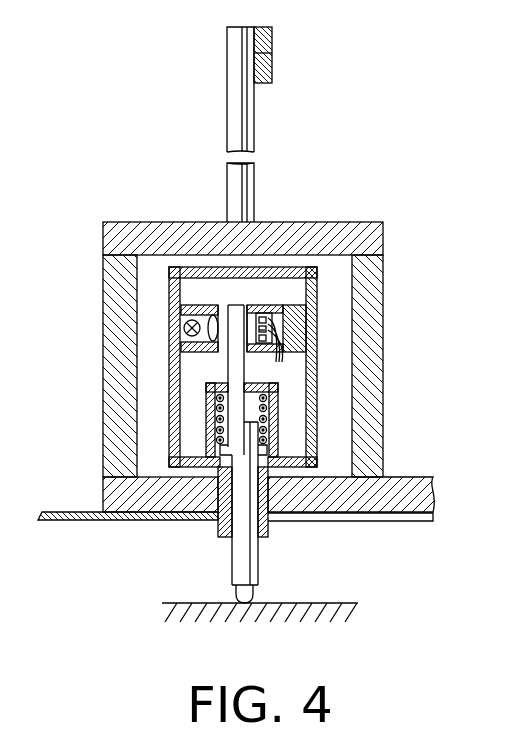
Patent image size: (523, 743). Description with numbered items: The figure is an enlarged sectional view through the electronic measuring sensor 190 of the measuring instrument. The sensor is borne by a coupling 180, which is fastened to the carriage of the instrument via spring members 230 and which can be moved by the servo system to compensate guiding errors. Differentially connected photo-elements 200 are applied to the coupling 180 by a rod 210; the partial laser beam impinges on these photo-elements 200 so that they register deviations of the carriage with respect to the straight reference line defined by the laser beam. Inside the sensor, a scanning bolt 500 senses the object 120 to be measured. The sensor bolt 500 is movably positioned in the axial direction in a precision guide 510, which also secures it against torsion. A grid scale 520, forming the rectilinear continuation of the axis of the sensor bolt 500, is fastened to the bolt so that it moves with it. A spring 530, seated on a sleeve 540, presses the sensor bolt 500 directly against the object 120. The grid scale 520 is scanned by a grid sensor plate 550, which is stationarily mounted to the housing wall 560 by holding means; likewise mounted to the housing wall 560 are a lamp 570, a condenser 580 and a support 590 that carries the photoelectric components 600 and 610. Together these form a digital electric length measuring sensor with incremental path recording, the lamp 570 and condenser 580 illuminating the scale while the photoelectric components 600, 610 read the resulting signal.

The object to be measured 120 is at (318, 603).
The coupling 180 is at (103, 334).
The electronic measuring sensor 190 is at (169, 376).
The photo-elements 200 is at (275, 65).
The rod 210 is at (233, 100).
The spring members 230 is at (92, 512).
The scanning bolt 500 is at (254, 568).
The precision guide 510 is at (268, 533).
The grid scale 520 is at (238, 373).
The spring 530 is at (272, 428).
The sleeve 540 is at (207, 420).
The grid sensor plate 550 is at (252, 305).
The housing wall 560 is at (272, 322).
The lamp 570 is at (184, 326).
The condenser 580 is at (212, 314).
The support 590 is at (283, 308).
The photoelectric component 600 is at (262, 313).
The photoelectric component 610 is at (270, 329).